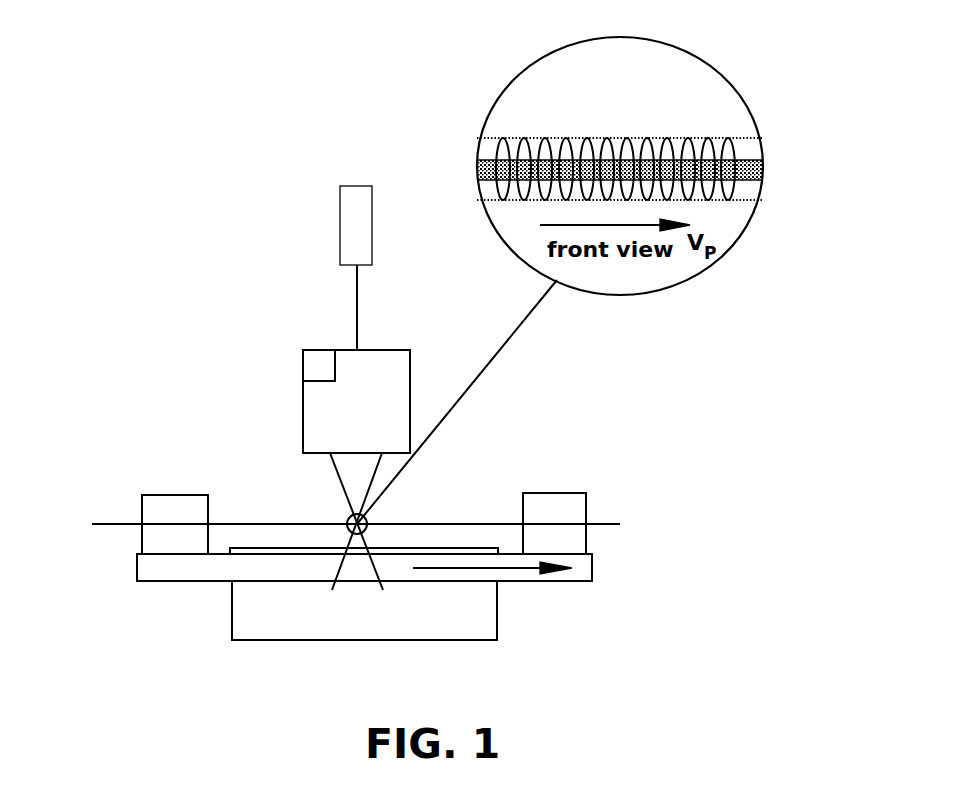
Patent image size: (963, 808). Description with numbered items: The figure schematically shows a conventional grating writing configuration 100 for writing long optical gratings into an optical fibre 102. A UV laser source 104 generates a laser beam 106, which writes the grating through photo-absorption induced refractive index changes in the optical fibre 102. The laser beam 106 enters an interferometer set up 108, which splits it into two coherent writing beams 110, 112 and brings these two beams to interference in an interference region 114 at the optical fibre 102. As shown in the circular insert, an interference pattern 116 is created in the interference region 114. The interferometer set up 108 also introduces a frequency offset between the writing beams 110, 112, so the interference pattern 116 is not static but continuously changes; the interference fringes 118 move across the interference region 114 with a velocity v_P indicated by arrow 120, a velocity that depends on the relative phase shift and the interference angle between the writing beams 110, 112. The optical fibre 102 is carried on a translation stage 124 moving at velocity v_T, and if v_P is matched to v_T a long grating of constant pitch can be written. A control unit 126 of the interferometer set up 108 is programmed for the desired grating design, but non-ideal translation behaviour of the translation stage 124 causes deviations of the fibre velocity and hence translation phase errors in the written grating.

The grating writing configuration 100 is at (567, 673).
The optical fibre 102 is at (497, 520).
The UV laser source 104 is at (340, 224).
The laser beam 106 is at (357, 310).
The interferometer set up 108 is at (303, 421).
The writing beam 110 is at (342, 487).
The writing beam 112 is at (370, 480).
The interference region 114 is at (357, 524).
The interference pattern 116 is at (713, 130).
The interference fringe 118 is at (547, 140).
The arrow 120 is at (560, 225).
The translation stage 124 is at (232, 608).
The control unit 126 is at (318, 362).